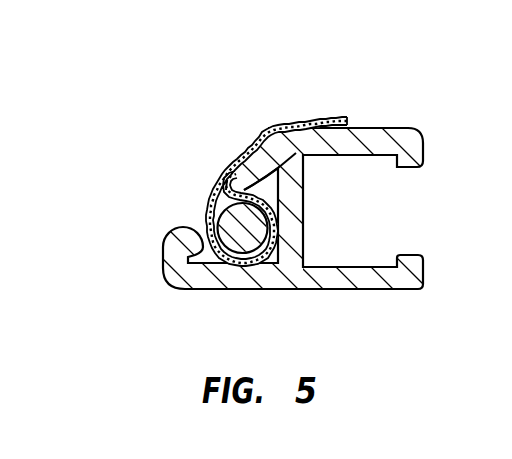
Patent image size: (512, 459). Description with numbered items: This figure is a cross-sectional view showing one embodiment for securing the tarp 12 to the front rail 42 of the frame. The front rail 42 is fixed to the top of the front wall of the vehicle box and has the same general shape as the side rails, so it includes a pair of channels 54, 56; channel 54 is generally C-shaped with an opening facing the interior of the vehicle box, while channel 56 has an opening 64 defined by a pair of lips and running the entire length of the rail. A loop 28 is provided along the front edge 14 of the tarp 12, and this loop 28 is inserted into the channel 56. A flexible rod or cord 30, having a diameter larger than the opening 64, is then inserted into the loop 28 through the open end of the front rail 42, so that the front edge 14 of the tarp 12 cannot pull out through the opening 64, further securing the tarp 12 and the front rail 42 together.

The tarp 12 is at (287, 110).
The front edge 14 is at (245, 152).
The loop 28 is at (216, 183).
The flexible rod or cord 30 is at (247, 243).
The front rail 42 is at (393, 110).
The channel 54 is at (360, 206).
The channel 56 is at (210, 249).
The opening 64 is at (192, 204).